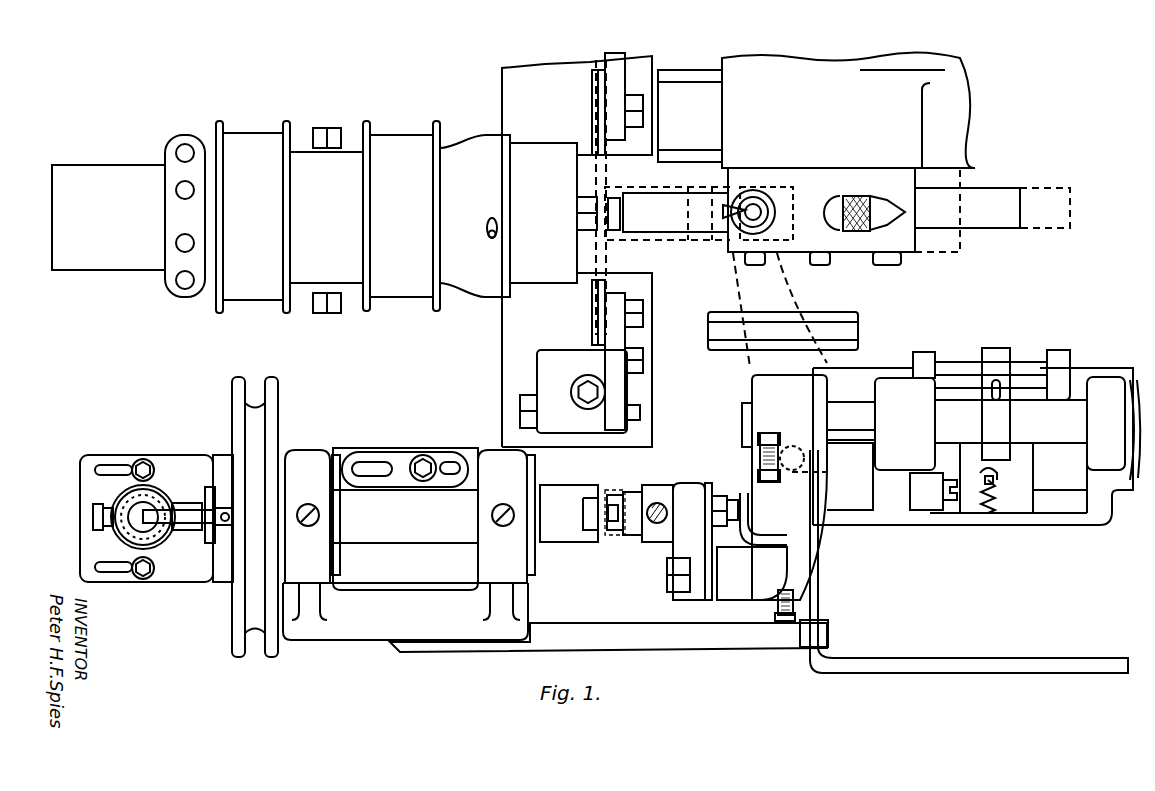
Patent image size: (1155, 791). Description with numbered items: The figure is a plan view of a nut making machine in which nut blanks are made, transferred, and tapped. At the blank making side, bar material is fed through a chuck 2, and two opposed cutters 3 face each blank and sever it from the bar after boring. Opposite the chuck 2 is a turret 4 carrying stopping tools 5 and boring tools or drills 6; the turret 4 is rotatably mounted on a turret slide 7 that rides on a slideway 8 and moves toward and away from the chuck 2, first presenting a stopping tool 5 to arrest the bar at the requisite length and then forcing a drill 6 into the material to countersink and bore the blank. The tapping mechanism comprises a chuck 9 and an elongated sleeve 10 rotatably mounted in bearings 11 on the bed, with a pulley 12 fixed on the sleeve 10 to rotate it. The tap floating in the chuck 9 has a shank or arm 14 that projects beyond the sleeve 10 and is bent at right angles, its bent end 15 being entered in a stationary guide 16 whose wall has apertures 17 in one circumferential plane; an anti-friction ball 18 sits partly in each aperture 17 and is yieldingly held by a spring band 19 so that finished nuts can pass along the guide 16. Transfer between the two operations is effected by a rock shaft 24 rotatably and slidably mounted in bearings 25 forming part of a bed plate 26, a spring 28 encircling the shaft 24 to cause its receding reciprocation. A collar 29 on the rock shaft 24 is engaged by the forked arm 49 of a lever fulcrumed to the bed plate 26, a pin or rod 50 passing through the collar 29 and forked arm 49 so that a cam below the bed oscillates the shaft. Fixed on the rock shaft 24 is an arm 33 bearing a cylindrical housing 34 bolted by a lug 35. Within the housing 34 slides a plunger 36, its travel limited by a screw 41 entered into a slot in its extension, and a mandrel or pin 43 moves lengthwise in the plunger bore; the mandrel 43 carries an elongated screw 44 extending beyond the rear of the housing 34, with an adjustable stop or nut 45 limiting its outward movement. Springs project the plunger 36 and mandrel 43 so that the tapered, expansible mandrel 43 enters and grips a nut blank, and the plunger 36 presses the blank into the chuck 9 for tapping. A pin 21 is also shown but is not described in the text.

The chuck 2 is at (553, 213).
The cutters 3 is at (596, 105).
The turret 4 is at (844, 216).
The stopping tool 5 is at (627, 250).
The boring tool or drill 6 is at (745, 208).
The turret slide 7 is at (848, 110).
The slideway 8 is at (690, 116).
The chuck 9 is at (576, 526).
The elongated sleeve 10 is at (405, 519).
The bearings 11 is at (409, 545).
The pulley 12 is at (280, 402).
The shank or arm 14 is at (190, 510).
The bent end 15 is at (95, 513).
The stationary guide 16 is at (122, 492).
The apertures 17 is at (128, 540).
The anti-friction ball 18 is at (115, 530).
The spring band 19 is at (112, 505).
The pin 21 is at (613, 532).
The rock shaft 24 is at (1011, 402).
The bearings 25 is at (1000, 423).
The bed plate 26 is at (952, 518).
The spring 28 is at (1130, 447).
The collar 29 is at (1000, 356).
The arm 33 is at (773, 487).
The cylindrical housing 34 is at (668, 545).
The lug 35 is at (697, 600).
The plunger 36 is at (632, 492).
The screw 41 is at (660, 510).
The mandrel or pin 43 is at (596, 197).
The elongated screw 44 is at (735, 500).
The adjustable stop or nut 45 is at (713, 496).
The forked lever arm 49 is at (927, 352).
The pin or rod 50 is at (1030, 365).